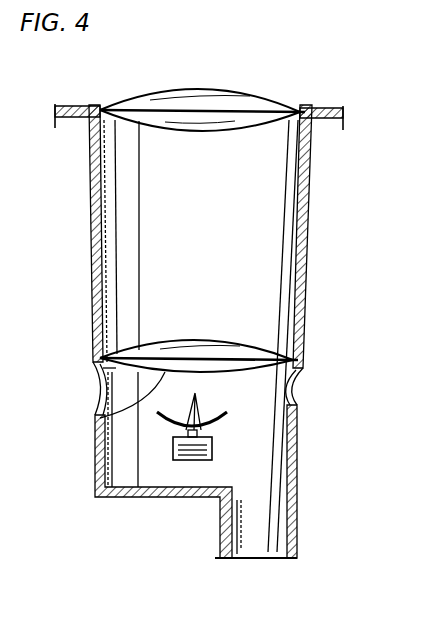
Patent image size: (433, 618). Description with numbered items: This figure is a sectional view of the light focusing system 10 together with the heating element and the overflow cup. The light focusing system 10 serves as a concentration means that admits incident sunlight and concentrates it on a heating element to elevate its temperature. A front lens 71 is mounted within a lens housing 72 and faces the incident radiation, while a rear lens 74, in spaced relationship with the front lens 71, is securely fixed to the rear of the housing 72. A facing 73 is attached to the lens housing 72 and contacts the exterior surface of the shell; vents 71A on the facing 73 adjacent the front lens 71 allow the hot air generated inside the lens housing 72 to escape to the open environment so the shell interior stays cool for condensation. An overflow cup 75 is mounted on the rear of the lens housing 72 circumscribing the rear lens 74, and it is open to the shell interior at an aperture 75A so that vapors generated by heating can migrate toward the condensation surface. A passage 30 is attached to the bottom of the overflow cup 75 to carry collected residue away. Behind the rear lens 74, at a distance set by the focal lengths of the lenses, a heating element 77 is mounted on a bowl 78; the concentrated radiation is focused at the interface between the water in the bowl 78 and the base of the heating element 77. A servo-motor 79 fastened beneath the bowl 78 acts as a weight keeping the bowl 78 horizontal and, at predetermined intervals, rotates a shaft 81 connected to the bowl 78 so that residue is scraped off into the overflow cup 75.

The light focusing system 10 is at (80, 286).
The passage 30 is at (293, 556).
The front lens 71 is at (212, 97).
The vents 71A is at (103, 108).
The lens housing 72 is at (90, 236).
The facing 73 is at (74, 107).
The rear lens 74 is at (230, 350).
The overflow cup 75 is at (93, 425).
The aperture 75A is at (110, 382).
The heating element 77 is at (163, 393).
The bowl 78 is at (165, 413).
The servo-motor 79 is at (213, 448).
The shaft 81 is at (212, 430).